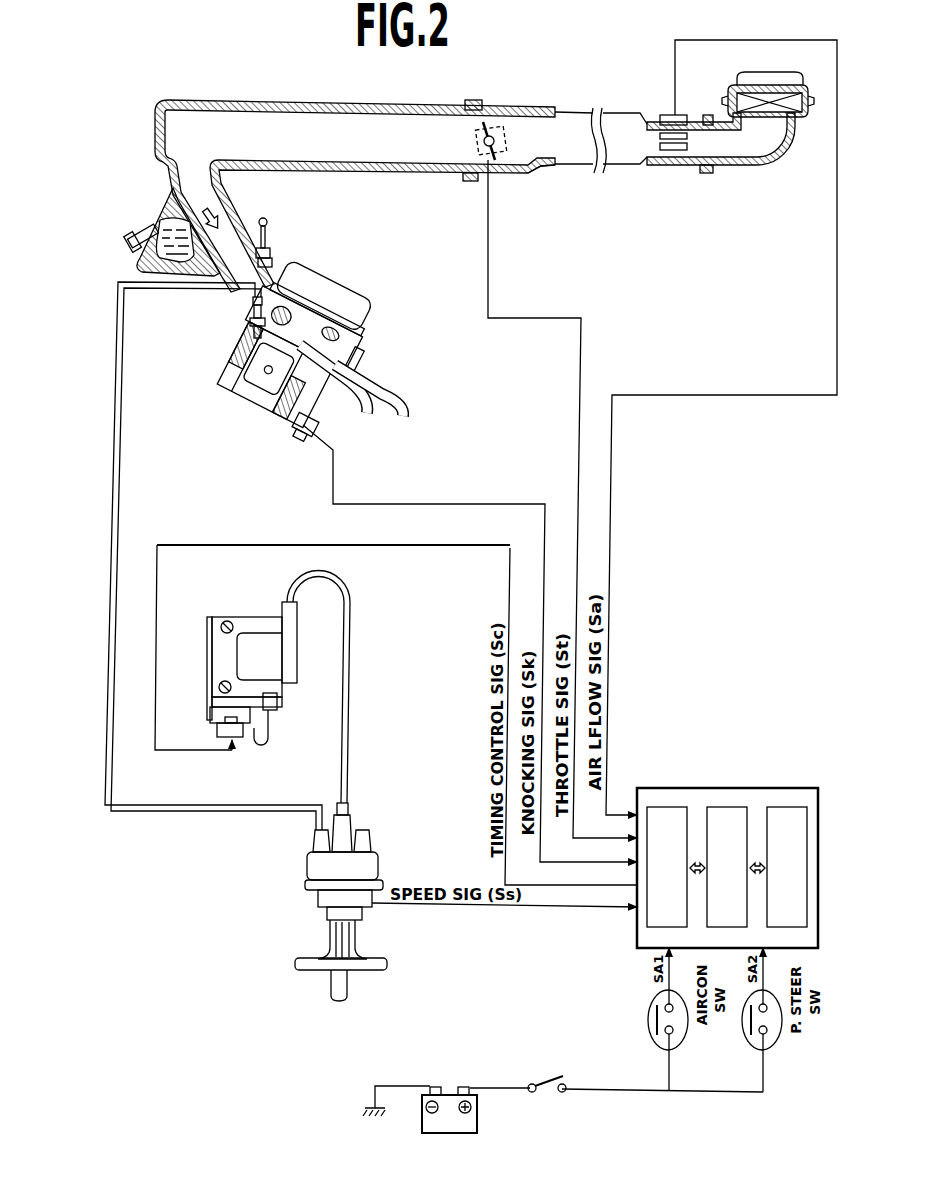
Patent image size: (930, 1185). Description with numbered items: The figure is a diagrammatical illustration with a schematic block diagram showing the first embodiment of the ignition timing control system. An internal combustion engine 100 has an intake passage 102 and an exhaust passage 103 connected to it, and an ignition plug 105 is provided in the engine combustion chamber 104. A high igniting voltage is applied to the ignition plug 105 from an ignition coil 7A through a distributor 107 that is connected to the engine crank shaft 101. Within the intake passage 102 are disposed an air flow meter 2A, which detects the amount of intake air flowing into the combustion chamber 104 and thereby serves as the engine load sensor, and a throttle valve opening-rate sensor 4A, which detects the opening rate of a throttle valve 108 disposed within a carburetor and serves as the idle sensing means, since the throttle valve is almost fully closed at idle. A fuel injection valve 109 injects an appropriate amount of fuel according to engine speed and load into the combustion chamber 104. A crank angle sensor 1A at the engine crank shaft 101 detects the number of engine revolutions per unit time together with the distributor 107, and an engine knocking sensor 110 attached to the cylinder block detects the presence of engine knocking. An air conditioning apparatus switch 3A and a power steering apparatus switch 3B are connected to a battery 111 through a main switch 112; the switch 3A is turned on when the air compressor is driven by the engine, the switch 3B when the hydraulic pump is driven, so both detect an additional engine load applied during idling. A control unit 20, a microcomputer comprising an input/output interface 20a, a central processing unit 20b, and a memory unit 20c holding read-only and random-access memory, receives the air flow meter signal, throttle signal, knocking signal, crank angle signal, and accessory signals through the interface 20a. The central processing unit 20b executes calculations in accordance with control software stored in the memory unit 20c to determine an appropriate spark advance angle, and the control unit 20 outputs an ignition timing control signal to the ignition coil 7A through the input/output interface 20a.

The intake passage 102 is at (242, 110).
The throttle valve opening-rate sensor 4A is at (497, 127).
The throttle valve 108 is at (508, 157).
The air flow meter 2A is at (681, 114).
The fuel injection valve 109 is at (270, 241).
The internal combustion engine 100 is at (366, 312).
The engine combustion chamber 104 is at (335, 350).
The exhaust passage 103 is at (385, 405).
The ignition plug 105 is at (250, 318).
The engine knocking sensor 110 is at (301, 436).
The ignition coil 7A is at (290, 665).
The distributor 107 is at (376, 862).
The crank angle sensor 1A is at (363, 910).
The engine crank shaft 101 is at (343, 988).
The control unit 20 is at (727, 786).
The input/output interface 20a is at (667, 867).
The central processing unit 20b is at (727, 867).
The memory unit 20c is at (787, 867).
The air conditioning apparatus switch 3A is at (652, 1037).
The power steering apparatus switch 3B is at (745, 1037).
The battery 111 is at (448, 1097).
The main switch 112 is at (544, 1079).